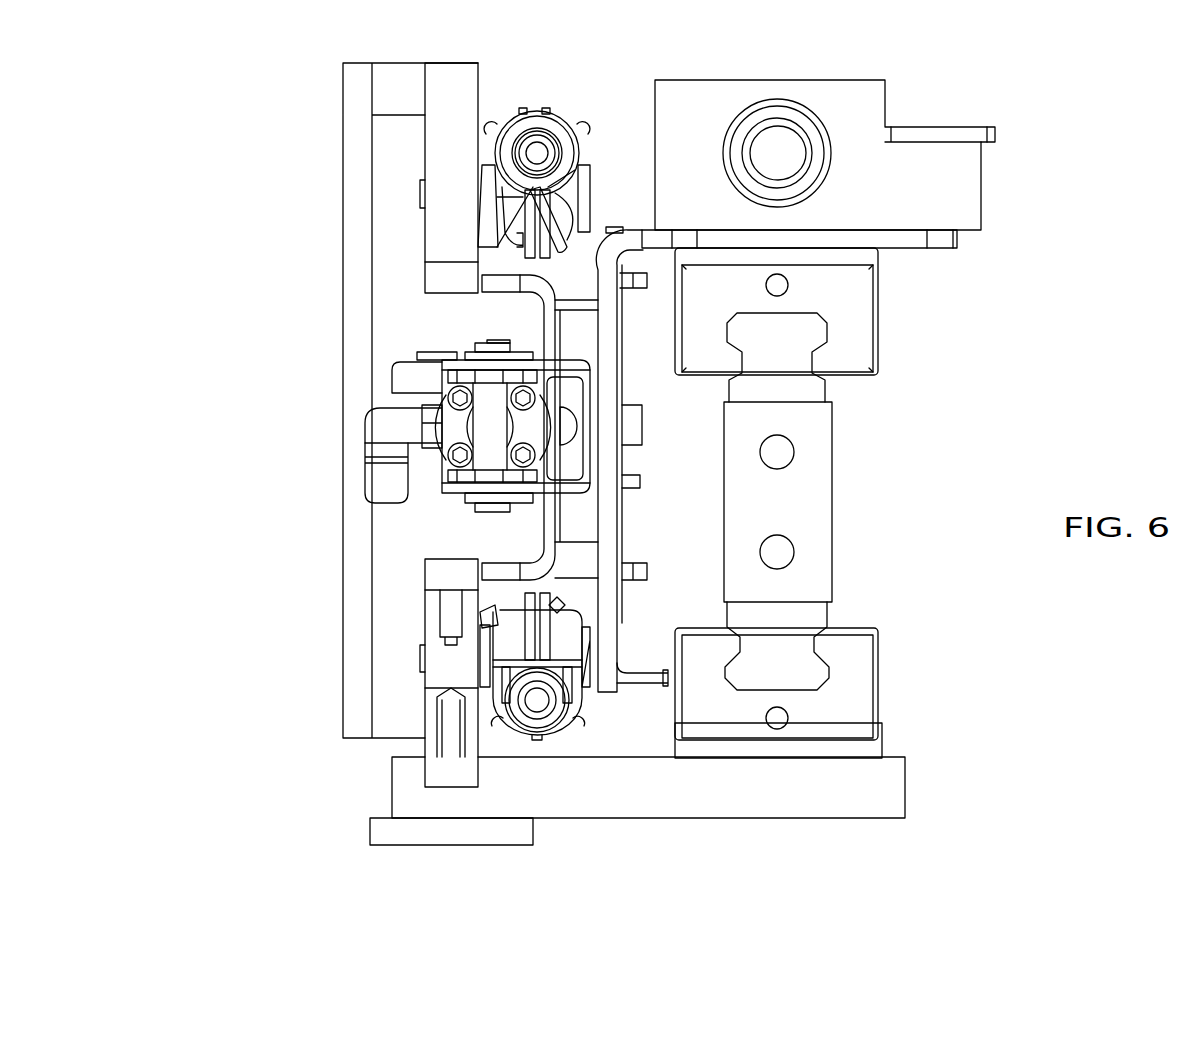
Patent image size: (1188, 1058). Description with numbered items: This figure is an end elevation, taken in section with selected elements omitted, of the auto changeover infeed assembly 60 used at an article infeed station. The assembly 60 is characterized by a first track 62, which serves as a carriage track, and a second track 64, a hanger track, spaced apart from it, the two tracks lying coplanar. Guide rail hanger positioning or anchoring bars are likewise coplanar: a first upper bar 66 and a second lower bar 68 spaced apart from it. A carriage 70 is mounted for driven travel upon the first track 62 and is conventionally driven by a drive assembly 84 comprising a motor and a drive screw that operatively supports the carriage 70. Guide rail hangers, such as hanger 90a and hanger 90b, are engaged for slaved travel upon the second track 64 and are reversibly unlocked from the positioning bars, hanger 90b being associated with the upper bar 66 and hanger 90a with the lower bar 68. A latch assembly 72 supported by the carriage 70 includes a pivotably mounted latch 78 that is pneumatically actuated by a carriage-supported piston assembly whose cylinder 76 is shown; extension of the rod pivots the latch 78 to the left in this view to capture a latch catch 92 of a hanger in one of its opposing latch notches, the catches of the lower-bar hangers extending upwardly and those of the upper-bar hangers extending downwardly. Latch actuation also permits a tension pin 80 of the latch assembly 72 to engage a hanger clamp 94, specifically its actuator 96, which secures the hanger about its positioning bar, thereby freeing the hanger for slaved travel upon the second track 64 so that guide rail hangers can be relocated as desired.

The auto changeover infeed assembly 60 is at (303, 252).
The first track 62 is at (793, 371).
The second track 64 is at (793, 661).
The first upper bar 66 is at (538, 152).
The second lower bar 68 is at (541, 702).
The carriage 70 is at (910, 262).
The latch assembly 72 is at (493, 318).
The cylinder 76 is at (445, 462).
The latch 78 is at (592, 338).
The tension pin 80 is at (604, 240).
The drive assembly 84 is at (786, 142).
The guide rail hanger 90a is at (433, 617).
The guide rail hanger 90b is at (478, 154).
The latch catch 92 is at (470, 288).
The hanger clamp 94 is at (506, 118).
The actuator 96 is at (557, 235).